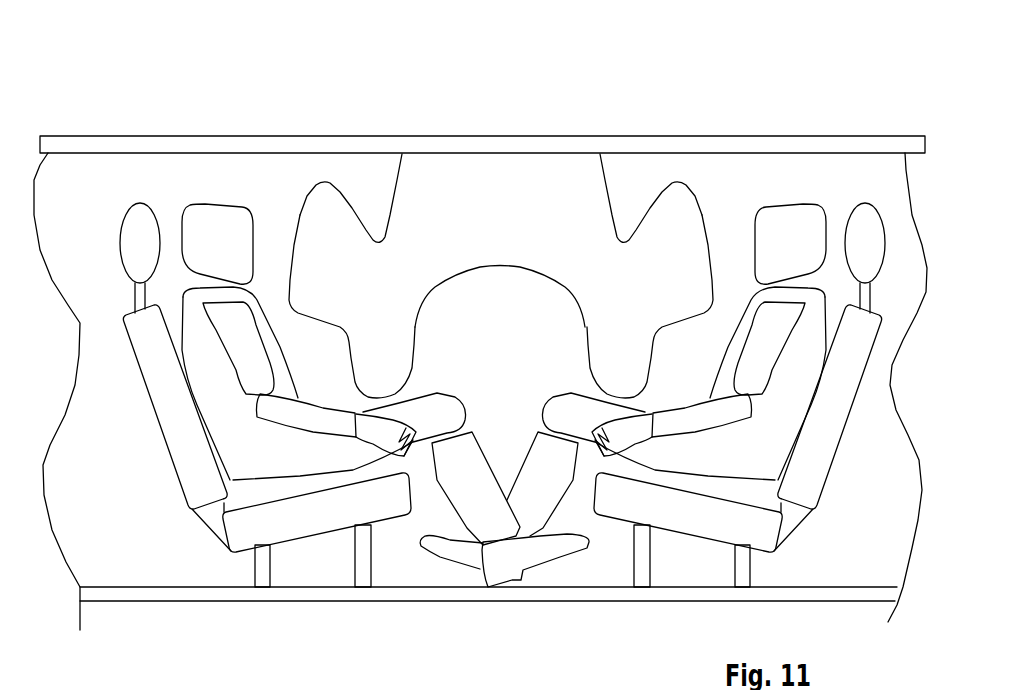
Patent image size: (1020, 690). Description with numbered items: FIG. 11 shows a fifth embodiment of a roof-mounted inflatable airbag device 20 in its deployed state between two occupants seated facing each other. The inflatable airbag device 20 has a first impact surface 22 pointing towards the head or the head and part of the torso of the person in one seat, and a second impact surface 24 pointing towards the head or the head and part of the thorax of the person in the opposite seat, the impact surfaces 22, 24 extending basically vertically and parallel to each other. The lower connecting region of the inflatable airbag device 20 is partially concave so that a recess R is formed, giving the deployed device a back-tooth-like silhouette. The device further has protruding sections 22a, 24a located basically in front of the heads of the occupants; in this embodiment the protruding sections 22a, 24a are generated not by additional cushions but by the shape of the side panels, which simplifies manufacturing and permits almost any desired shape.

The inflatable airbag device 20 is at (475, 205).
The first impact surface 22 is at (731, 205).
The protruding section 22a is at (660, 247).
The second impact surface 24 is at (245, 216).
The protruding section 24a is at (330, 238).
The recess R is at (493, 320).